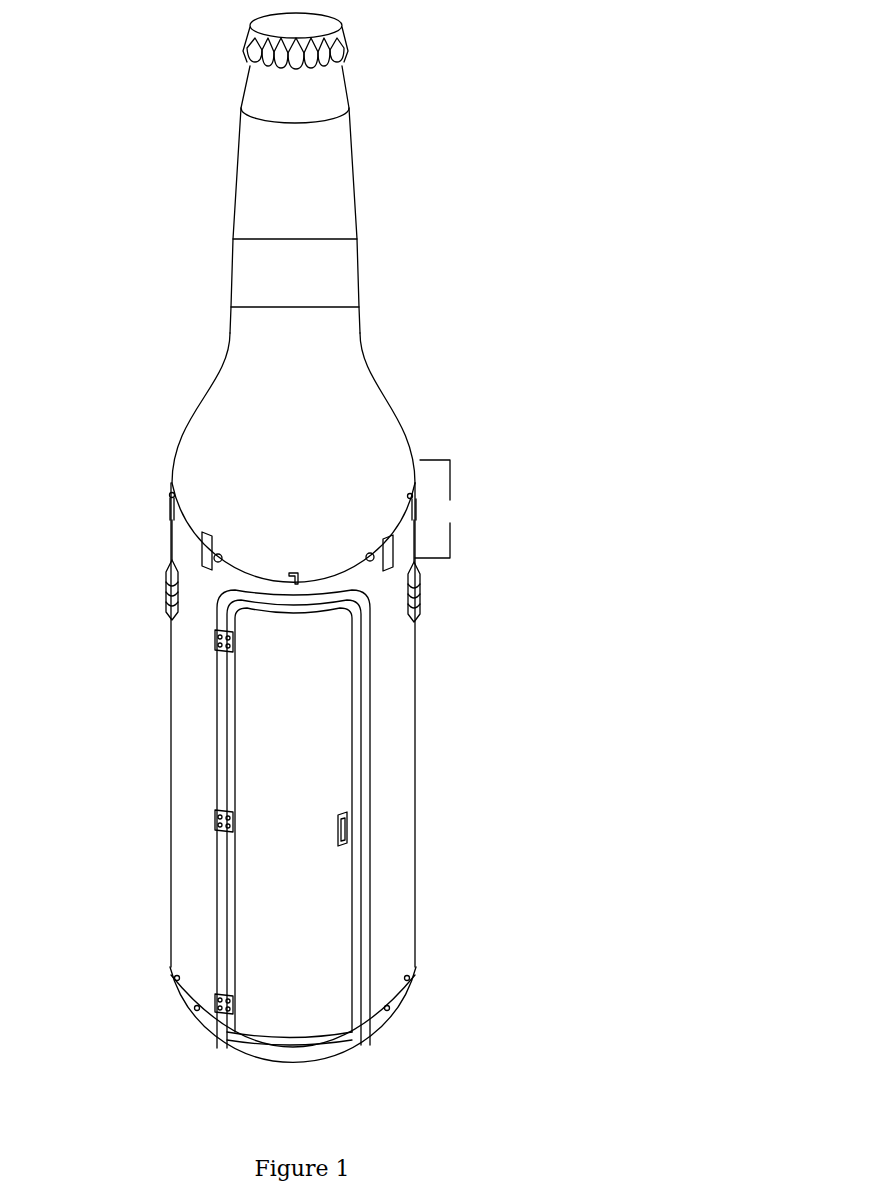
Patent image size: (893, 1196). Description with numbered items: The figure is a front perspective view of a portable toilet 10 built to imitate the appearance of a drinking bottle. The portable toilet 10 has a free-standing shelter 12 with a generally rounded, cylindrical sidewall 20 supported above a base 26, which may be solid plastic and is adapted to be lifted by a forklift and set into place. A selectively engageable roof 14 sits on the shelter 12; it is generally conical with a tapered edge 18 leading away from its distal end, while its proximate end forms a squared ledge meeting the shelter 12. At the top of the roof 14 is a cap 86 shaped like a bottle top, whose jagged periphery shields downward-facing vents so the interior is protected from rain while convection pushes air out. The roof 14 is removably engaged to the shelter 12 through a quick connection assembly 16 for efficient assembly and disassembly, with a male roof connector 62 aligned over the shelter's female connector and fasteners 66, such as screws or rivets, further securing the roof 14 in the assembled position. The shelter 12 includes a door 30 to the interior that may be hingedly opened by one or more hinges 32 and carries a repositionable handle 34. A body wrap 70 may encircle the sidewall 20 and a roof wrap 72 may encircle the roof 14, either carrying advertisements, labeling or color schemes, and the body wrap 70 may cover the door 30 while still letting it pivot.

The portable toilet 10 is at (143, 272).
The shelter 12 is at (187, 626).
The roof 14 is at (346, 55).
The quick connection assembly 16 is at (440, 509).
The tapered edge 18 is at (358, 207).
The sidewall 20 is at (383, 775).
The base 26 is at (203, 1032).
The door 30 is at (345, 957).
The hinges 32 is at (213, 643).
The handle 34 is at (347, 826).
The male roof connector 62 is at (198, 548).
The fasteners 66 is at (210, 537).
The body wrap 70 is at (415, 705).
The roof wrap 72 is at (295, 273).
The cap 86 is at (277, 22).